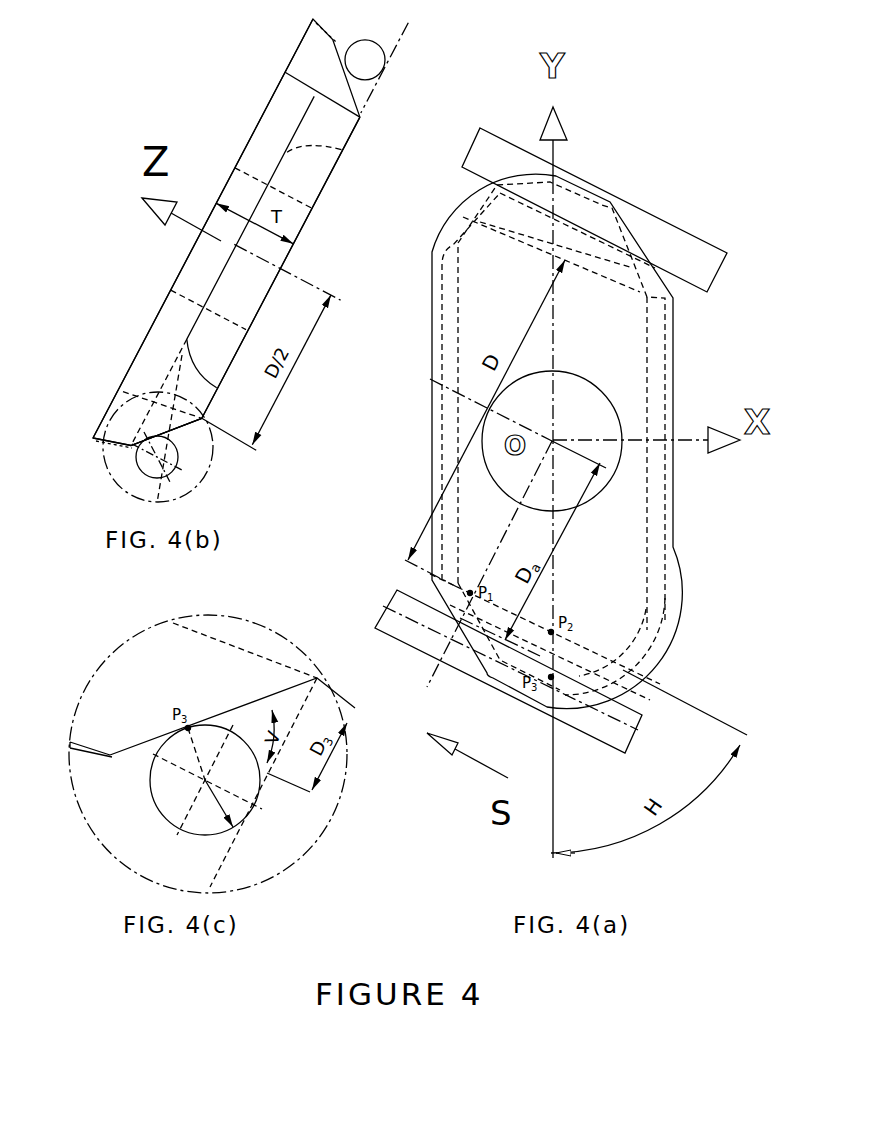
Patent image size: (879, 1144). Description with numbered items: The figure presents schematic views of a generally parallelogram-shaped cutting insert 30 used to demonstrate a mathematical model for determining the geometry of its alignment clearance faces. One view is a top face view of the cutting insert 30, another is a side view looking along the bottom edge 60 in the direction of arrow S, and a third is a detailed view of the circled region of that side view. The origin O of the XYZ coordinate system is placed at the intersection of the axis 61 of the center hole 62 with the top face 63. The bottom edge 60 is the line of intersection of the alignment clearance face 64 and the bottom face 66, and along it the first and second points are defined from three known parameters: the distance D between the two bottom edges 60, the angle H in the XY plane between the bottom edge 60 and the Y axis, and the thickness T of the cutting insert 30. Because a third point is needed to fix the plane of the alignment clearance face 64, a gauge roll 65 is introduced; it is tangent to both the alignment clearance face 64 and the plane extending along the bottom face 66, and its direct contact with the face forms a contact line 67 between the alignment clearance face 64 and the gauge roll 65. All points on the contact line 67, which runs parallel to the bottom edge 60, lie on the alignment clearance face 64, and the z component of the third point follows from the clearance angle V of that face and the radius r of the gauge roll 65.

In FIG. 4B, the cutting insert 30 is at (240, 93).
In FIG. 4A, the bottom edge 60 is at (533, 240).
In FIG. 4B, the axis 61 is at (217, 240).
In FIG. 4A, the center hole 62 is at (578, 405).
In FIG. 4B, the top face 63 is at (140, 332).
In FIG. 4B, the alignment clearance face 64 is at (130, 440).
In FIG. 4A, the alignment clearance face 64 is at (537, 223).
In FIG. 4C, the alignment clearance face 64 is at (138, 735).
In FIG. 4B, the gauge roll 65 is at (387, 52).
In FIG. 4A, the gauge roll 65 is at (655, 208).
In FIG. 4C, the gauge roll 65 is at (152, 813).
In FIG. 4B, the bottom face 66 is at (308, 230).
In FIG. 4A, the contact line 67 is at (563, 690).